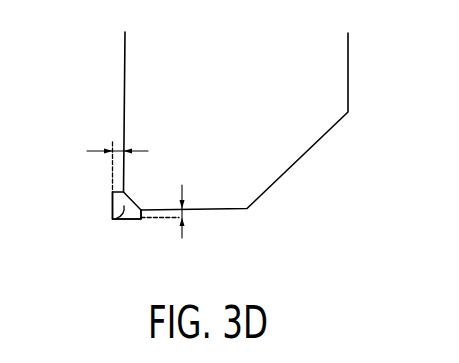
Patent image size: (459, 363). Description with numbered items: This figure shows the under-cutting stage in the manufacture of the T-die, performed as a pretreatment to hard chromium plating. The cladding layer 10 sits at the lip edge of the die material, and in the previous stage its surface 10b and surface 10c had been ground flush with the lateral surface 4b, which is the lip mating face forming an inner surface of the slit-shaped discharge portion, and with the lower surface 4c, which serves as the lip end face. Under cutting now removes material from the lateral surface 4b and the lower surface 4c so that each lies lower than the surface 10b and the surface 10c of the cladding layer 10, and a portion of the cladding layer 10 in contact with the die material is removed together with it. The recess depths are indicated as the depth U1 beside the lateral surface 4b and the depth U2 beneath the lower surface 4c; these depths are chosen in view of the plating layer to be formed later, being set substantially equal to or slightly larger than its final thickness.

The lateral surface 4b is at (128, 83).
The lower surface 4c is at (237, 211).
The cladding layer 10 is at (112, 219).
The surface of the cladding layer 10b is at (112, 205).
The surface of the cladding layer 10c is at (140, 219).
The depth for under cutting U1 is at (112, 138).
The depth for under cutting U2 is at (188, 211).